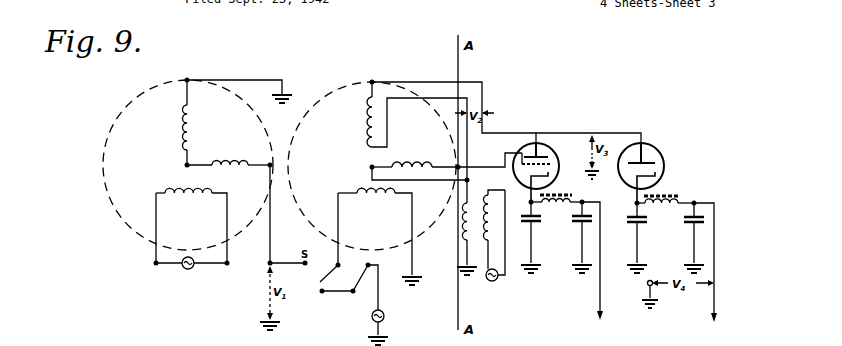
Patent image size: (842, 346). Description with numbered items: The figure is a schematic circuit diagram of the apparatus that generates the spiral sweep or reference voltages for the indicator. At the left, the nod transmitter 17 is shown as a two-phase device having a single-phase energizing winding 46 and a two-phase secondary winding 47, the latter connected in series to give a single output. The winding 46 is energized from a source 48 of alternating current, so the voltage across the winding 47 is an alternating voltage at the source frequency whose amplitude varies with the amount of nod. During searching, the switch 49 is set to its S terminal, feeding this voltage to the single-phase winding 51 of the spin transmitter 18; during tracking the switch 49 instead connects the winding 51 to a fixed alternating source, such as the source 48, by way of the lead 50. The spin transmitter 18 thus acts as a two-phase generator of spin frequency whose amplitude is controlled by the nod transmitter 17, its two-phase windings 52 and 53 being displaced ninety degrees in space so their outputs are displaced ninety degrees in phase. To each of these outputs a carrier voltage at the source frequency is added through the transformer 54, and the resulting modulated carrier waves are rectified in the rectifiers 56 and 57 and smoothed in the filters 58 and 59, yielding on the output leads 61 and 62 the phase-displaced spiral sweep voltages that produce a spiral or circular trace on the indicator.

The nod transmitter 17 is at (137, 101).
The spin transmitter 18 is at (334, 93).
The single-phase energizing winding 46 is at (172, 190).
The two-phase secondary winding 47 is at (213, 163).
The source of alternating current 48 is at (188, 270).
The switch 49 is at (318, 280).
The lead 50 is at (384, 303).
The single-phase winding 51 is at (357, 191).
The two-phase winding 52 is at (365, 121).
The two-phase winding 53 is at (403, 163).
The transformer 54 is at (474, 198).
The rectifier 56 is at (545, 146).
The rectifier 57 is at (663, 151).
The filter 58 is at (574, 250).
The filter 59 is at (682, 250).
The output lead 61 is at (606, 311).
The output lead 62 is at (710, 306).